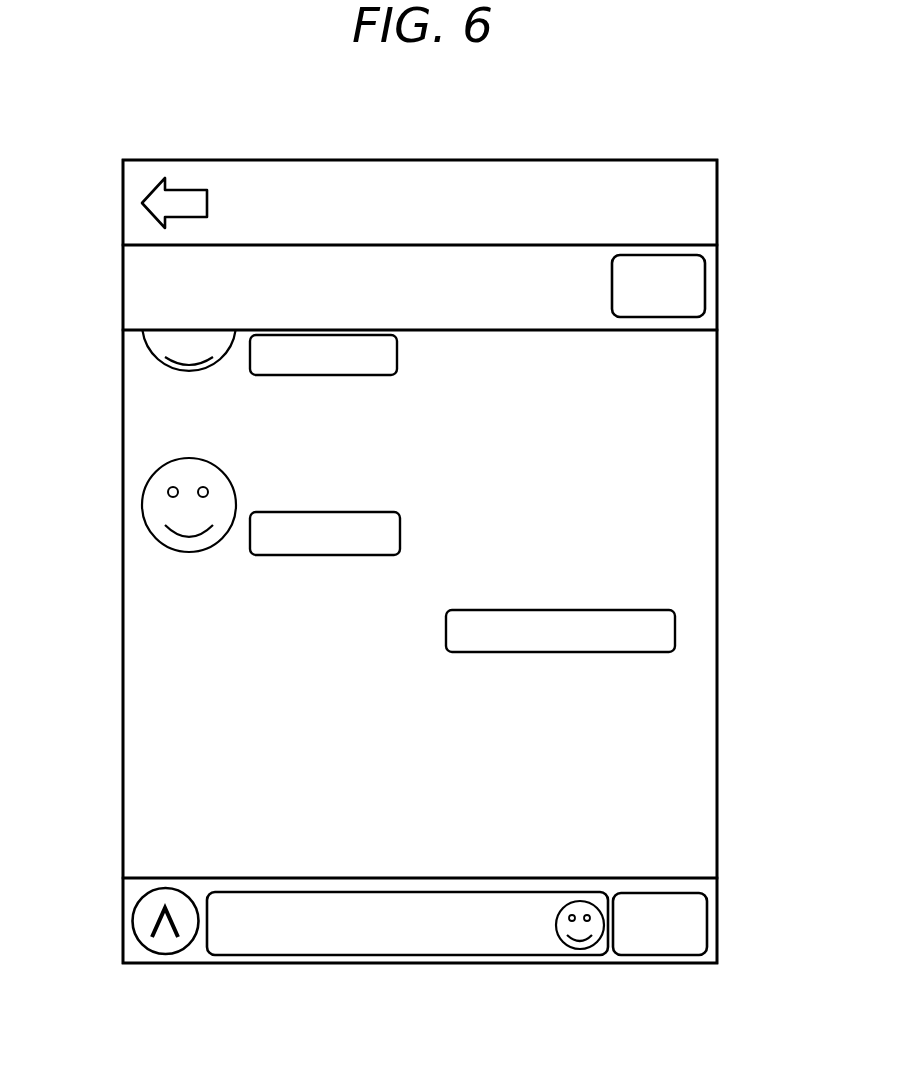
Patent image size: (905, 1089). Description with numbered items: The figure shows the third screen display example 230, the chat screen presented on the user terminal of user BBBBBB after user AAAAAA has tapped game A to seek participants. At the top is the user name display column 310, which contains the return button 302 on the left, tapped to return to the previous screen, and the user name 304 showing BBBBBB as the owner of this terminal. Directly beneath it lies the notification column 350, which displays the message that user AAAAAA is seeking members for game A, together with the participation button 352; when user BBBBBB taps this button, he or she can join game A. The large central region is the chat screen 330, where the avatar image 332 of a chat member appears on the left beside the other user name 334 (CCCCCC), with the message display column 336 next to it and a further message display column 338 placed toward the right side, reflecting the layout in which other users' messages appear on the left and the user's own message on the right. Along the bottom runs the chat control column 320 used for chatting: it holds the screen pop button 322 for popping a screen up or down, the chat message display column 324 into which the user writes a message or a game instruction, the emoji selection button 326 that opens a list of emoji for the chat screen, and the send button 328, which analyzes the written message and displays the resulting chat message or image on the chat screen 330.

The third screen display example 230 is at (538, 82).
The return button 302 is at (207, 182).
The user name 304 is at (495, 183).
The user name display column 310 is at (703, 208).
The notification column 350 is at (135, 293).
The participation button 352 is at (695, 303).
The chat screen 330 is at (707, 450).
The avatar image 332 is at (167, 457).
The other user name 334 is at (350, 470).
The message display column 336 is at (380, 512).
The message display column 338 is at (485, 612).
The chat control column 320 is at (685, 887).
The screen pop button 322 is at (168, 887).
The chat message display column 324 is at (385, 910).
The emoji selection button 326 is at (578, 902).
The send button 328 is at (655, 945).